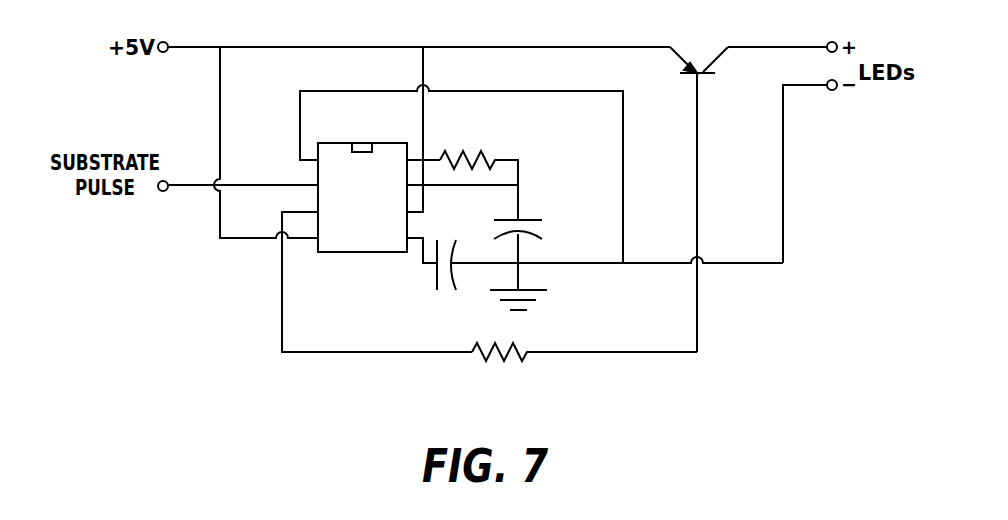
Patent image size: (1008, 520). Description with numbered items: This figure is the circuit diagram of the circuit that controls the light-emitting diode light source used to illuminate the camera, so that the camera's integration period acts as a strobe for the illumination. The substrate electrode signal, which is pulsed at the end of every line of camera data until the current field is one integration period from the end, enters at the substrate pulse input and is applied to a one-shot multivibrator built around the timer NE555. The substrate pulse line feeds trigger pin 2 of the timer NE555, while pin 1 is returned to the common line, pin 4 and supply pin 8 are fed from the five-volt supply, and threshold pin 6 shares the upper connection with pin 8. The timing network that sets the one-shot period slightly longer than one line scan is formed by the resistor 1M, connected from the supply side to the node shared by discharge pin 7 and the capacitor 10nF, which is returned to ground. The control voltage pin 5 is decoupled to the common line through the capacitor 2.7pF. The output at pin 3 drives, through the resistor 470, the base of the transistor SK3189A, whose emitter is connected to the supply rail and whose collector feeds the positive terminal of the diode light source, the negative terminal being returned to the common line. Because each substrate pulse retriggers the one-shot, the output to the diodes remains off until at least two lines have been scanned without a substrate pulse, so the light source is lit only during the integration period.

The NE555 timer IC NE555 is at (362, 184).
The 1 megohm resistor 1M is at (479, 173).
The 10 nF capacitor 10nF is at (549, 254).
The 2.7 pF capacitor 2.7pF is at (600, 281).
The 470 ohm resistor 470 is at (584, 366).
The SK3189A PNP transistor SK3189A is at (703, 185).
The NE555 pin 1 (ground) 1 is at (329, 162).
The NE555 pin 2 (trigger) 2 is at (329, 188).
The NE555 pin 3 (output) 3 is at (329, 214).
The NE555 pin 4 (reset) 4 is at (329, 240).
The NE555 pin 5 (control voltage) 5 is at (396, 240).
The NE555 pin 6 (threshold) 6 is at (396, 214).
The NE555 pin 7 (discharge) 7 is at (396, 188).
The NE555 pin 8 (Vcc) 8 is at (396, 162).